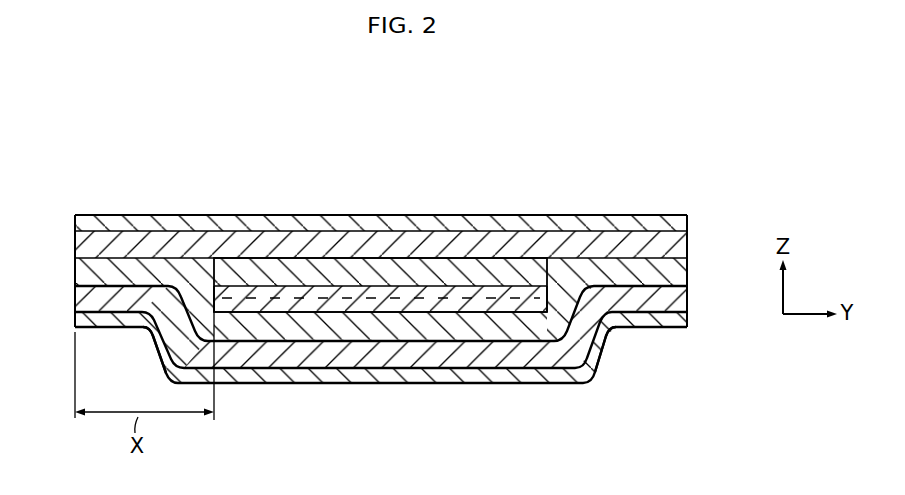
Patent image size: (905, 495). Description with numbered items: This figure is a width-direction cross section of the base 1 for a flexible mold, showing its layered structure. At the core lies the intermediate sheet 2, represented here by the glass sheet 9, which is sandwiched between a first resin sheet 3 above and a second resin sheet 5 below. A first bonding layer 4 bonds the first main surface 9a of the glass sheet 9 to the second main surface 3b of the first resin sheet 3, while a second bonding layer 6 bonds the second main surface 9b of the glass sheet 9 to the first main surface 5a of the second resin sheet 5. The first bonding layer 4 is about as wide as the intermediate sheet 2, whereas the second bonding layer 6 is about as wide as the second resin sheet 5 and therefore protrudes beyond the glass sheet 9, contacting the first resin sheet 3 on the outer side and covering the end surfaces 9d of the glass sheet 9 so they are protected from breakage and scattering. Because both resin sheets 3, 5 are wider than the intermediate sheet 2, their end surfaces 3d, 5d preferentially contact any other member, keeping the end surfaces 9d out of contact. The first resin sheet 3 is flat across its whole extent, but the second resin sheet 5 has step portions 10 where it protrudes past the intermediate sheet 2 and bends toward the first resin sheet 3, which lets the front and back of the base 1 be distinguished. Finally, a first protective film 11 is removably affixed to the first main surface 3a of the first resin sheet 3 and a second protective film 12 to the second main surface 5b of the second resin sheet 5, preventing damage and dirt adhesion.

The base 1 is at (366, 179).
The intermediate sheet 2 is at (263, 276).
The first resin sheet 3 is at (502, 242).
The first main surface of the first resin sheet 3a is at (448, 231).
The second main surface of the first resin sheet 3b is at (428, 263).
The end surface of the first resin sheet 3d is at (75, 242).
The first bonding layer 4 is at (522, 270).
The second resin sheet 5 is at (472, 353).
The first main surface of the second resin sheet 5a is at (455, 341).
The second main surface of the second resin sheet 5b is at (378, 369).
The end surface of the second resin sheet 5d is at (75, 297).
The second bonding layer 6 is at (537, 330).
The glass sheet 9 is at (337, 300).
The first main surface of the glass sheet 9a is at (307, 287).
The second main surface of the glass sheet 9b is at (295, 313).
The end surface of the glass sheet 9d is at (212, 300).
The step portion 10 is at (160, 353).
The first protective film 11 is at (610, 222).
The second protective film 12 is at (497, 377).